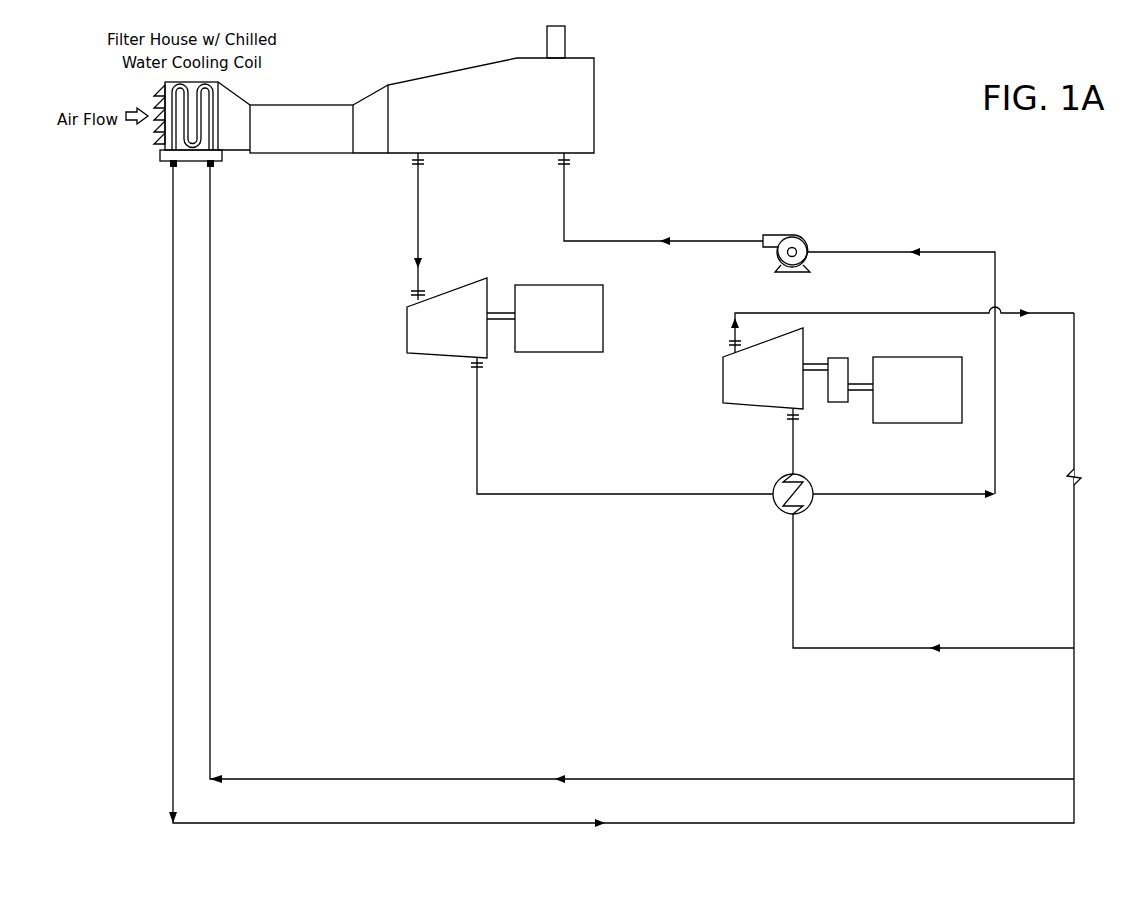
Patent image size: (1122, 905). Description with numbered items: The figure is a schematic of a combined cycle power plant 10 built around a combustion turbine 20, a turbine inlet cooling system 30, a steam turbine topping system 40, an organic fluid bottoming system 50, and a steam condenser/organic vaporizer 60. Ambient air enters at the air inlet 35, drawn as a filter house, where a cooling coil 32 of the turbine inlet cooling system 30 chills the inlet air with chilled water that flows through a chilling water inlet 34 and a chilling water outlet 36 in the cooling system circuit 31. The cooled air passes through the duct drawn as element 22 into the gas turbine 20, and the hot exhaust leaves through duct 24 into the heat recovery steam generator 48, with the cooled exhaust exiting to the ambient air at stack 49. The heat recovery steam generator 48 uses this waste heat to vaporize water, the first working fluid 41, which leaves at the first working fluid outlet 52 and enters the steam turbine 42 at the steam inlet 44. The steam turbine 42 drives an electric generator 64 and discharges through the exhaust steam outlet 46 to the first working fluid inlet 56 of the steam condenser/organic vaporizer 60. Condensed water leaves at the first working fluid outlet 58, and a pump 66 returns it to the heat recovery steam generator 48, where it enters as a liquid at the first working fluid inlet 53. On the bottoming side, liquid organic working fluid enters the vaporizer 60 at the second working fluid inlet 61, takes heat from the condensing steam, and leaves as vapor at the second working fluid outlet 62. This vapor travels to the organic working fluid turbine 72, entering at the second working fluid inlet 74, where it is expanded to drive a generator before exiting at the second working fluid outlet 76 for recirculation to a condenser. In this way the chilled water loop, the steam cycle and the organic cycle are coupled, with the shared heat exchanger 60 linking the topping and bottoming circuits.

The combined cycle power plant 10 is at (400, 46).
The combustion turbine 20 is at (300, 105).
The inlet duct 22 is at (235, 140).
The duct 24 is at (375, 140).
The turbine inlet cooling system 30 is at (116, 378).
The cooling system circuit 31 is at (692, 779).
The air cooling coil 32 is at (188, 133).
The chilling water inlet 34 is at (210, 167).
The air inlet 35 is at (160, 88).
The chilling water outlet 36 is at (173, 167).
The steam turbine topping system 40 is at (419, 387).
The first working fluid 41 is at (935, 250).
The steam turbine 42 is at (407, 330).
The steam inlet 44 is at (417, 292).
The exhaust steam outlet 46 is at (482, 365).
The heat recovery steam generator 48 is at (580, 88).
The stack 49 is at (565, 35).
The organic fluid bottoming system 50 is at (688, 430).
The first working fluid outlet 52 is at (424, 163).
The first working fluid inlet 53 is at (570, 163).
The first working fluid inlet 56 is at (605, 496).
The first working fluid outlet 58 is at (940, 495).
The steam condenser/organic vaporizer 60 is at (812, 507).
The second working fluid inlet 61 is at (793, 525).
The second working fluid outlet 62 is at (793, 457).
The electric generator 64 is at (603, 302).
The pump 66 is at (808, 258).
The organic working fluid turbine 72 is at (723, 385).
The second working fluid inlet 74 is at (793, 416).
The second working fluid outlet 76 is at (735, 343).